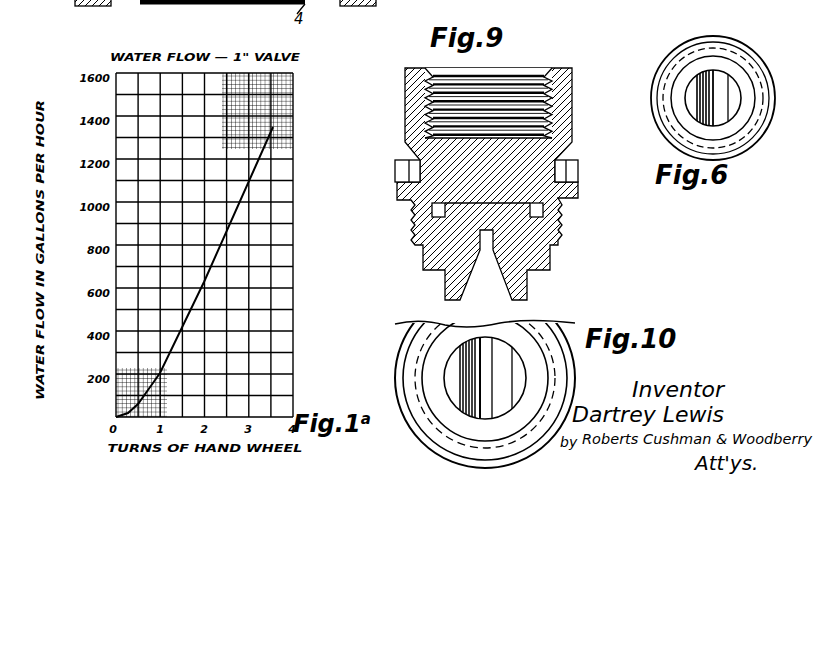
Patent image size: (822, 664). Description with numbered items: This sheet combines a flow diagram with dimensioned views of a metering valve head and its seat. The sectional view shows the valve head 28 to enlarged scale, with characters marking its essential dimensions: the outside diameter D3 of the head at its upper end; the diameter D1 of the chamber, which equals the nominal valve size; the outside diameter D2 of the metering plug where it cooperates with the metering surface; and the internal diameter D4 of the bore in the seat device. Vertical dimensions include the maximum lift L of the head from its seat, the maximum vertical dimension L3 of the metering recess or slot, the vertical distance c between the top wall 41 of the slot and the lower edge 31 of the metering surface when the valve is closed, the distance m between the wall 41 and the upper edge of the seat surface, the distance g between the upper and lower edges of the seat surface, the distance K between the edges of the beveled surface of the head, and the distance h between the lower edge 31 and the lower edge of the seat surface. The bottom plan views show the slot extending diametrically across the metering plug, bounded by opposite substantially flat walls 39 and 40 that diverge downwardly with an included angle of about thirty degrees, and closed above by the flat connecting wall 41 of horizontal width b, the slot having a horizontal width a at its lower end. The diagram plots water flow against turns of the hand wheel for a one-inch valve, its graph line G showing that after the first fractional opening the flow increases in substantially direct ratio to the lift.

In FIG. 1A, the graph line G is at (215, 258).
In FIG. 9, the valve head 28 is at (570, 113).
In FIG. 9, the outside diameter of the valve head D3 is at (572, 55).
In FIG. 9, the vertical distance of the beveled surface K is at (392, 182).
In FIG. 9, the vertical distance of the seat surface g is at (578, 182).
In FIG. 9, the vertical distance between metering surface lower edge and seat surface lower edg h is at (562, 225).
In FIG. 9, the distance between slot top wall and seat surface upper edge m is at (333, 182).
In FIG. 9, the vertical distance between slot top wall and metering surface lower edge c is at (400, 207).
In FIG. 9, the maximum lift of the valve head L is at (360, 287).
In FIG. 9, the maximum vertical dimension of the recess or slot L3 is at (385, 300).
In FIG. 9, the diameter of the chamber D1 is at (543, 210).
In FIG. 9, the outside diameter of the metering plug D2 is at (445, 221).
In FIG. 9, the internal diameter of the bore in the seat device D4 is at (528, 262).
In FIG. 10, the internal diameter of the bore in the seat device D4 is at (444, 372).
In FIG. 9, the horizontal width of the slot upper wall b is at (470, 250).
In FIG. 10, the horizontal width of the slot upper wall b is at (470, 352).
In FIG. 9, the lower edge of the metering surface 31 is at (504, 274).
In FIG. 9, the horizontal width of the recess at its lower end a is at (512, 312).
In FIG. 10, the horizontal width of the recess at its lower end a is at (512, 393).
In FIG. 6, the flat wall of the slot 39 is at (699, 75).
In FIG. 6, the flat wall of the slot 40 is at (722, 84).
In FIG. 6, the top or connecting wall of the recess 41 is at (715, 72).